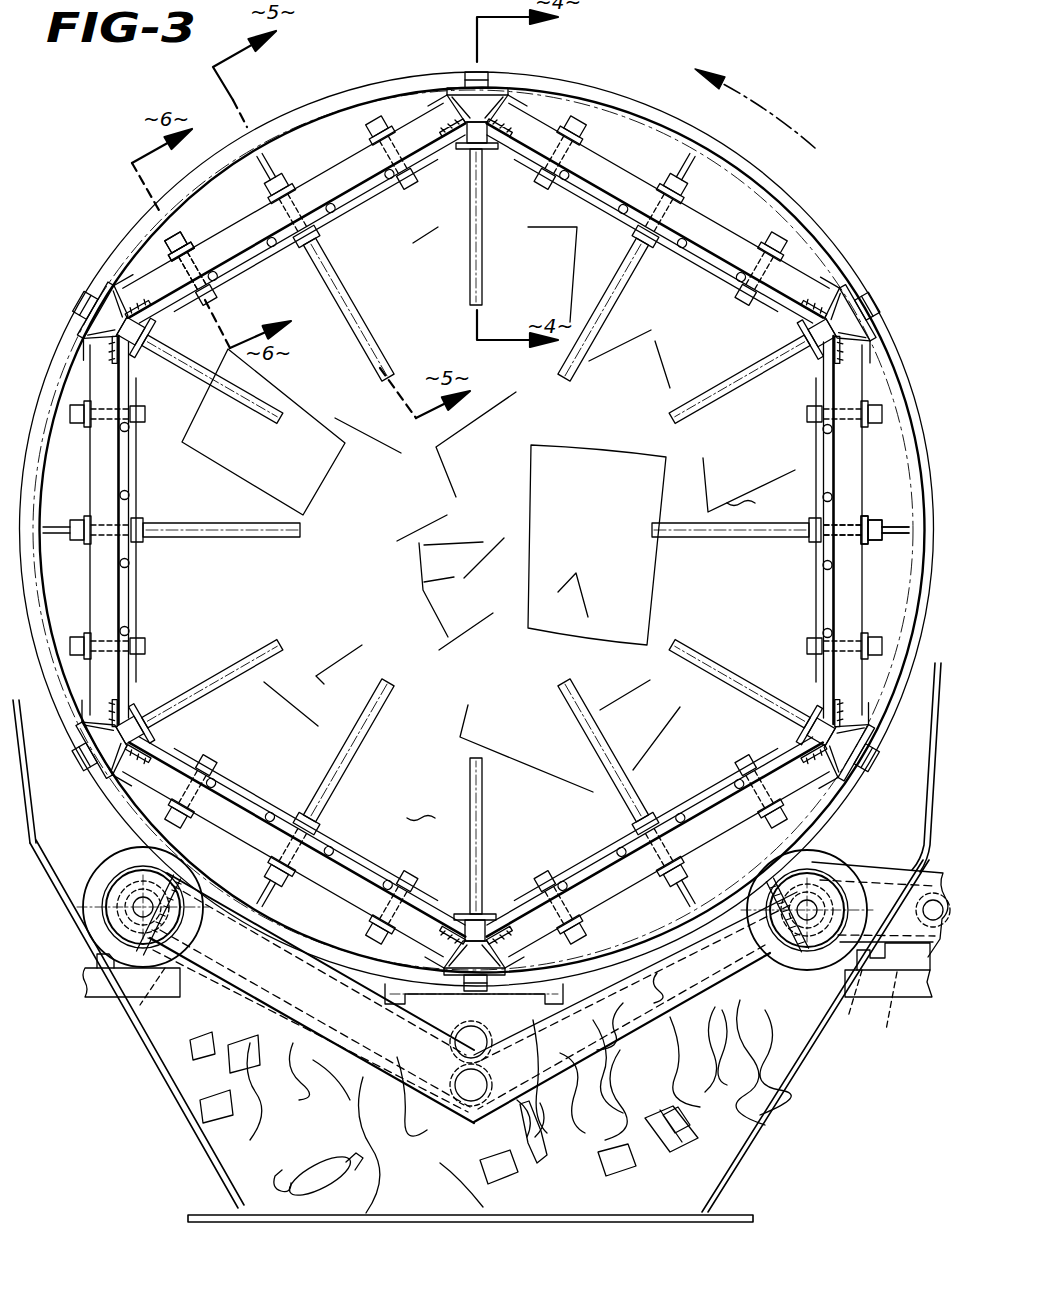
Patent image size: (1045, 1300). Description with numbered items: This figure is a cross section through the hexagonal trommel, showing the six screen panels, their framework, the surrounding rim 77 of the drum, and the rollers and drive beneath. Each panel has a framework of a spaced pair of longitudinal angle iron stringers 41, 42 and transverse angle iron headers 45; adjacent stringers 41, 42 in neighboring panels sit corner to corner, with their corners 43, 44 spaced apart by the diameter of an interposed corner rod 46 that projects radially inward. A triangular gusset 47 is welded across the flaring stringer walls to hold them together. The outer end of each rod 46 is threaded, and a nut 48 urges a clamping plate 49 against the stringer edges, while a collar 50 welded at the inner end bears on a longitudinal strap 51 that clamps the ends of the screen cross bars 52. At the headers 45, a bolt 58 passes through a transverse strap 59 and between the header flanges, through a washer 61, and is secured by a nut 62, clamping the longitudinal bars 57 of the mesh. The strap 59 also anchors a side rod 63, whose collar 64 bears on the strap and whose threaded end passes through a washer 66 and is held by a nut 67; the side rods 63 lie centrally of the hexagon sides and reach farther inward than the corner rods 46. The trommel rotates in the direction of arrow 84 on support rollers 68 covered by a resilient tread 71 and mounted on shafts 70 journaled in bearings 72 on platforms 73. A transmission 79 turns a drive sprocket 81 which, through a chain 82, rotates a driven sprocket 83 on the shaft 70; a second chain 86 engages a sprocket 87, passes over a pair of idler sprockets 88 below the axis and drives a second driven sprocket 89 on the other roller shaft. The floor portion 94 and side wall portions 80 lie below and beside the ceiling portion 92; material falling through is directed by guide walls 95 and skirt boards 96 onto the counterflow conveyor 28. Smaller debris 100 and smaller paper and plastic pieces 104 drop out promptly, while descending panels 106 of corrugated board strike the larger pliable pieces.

The counterflow conveyor 28 is at (552, 1222).
The longitudinal angle iron stringer 41 is at (90, 338).
The longitudinal angle iron stringer 42 is at (128, 285).
The corner 43 is at (450, 88).
The corner 44 is at (520, 100).
The transverse angle iron header 45 is at (840, 676).
The corner rod 46 is at (483, 262).
The gusset 47 is at (98, 318).
The nut 48 is at (492, 88).
The clamping plate 49 is at (468, 72).
The collar 50 is at (472, 150).
The longitudinal strap 51 is at (490, 135).
The cross bar 52 is at (395, 178).
The longitudinal bar 57 is at (388, 172).
The bolt 58 is at (206, 300).
The transverse strap 59 is at (350, 200).
The washer 61 is at (386, 118).
The nut 62 is at (170, 232).
The side rod 63 is at (363, 312).
The collar 64 is at (655, 262).
The washer 66 is at (290, 180).
The nut 67 is at (270, 185).
The support roller 68 is at (815, 858).
The shaft 70 is at (95, 912).
The resilient tread 71 is at (845, 870).
The bearing 72 is at (97, 960).
The platform 73 is at (105, 1000).
The rim 77 is at (812, 235).
The transmission mechanism 79 is at (925, 836).
The side wall portion 80 is at (740, 490).
The drive sprocket 81 is at (892, 1000).
The chain 82 is at (836, 1025).
The driven sprocket 83 is at (735, 1000).
The arrow 84 is at (770, 115).
The second chain 86 is at (340, 1000).
The sprocket 87 is at (765, 950).
The idler sprocket 88 is at (470, 1034).
The second driven sprocket 89 is at (140, 1005).
The roof or ceiling portion 92 is at (535, 298).
The floor portion 94 is at (420, 804).
The guide wall 95 is at (186, 1120).
The guide panel 96 is at (935, 742).
The smaller debris 100 is at (300, 1190).
The smaller paper and plastic pieces 104 is at (752, 1082).
The panel of corrugated board 106 is at (262, 484).